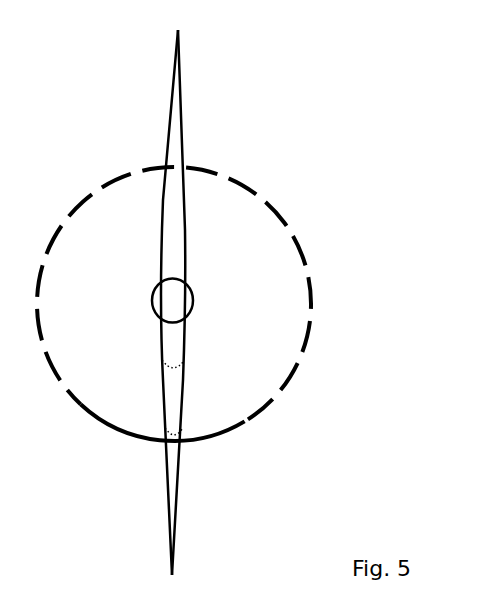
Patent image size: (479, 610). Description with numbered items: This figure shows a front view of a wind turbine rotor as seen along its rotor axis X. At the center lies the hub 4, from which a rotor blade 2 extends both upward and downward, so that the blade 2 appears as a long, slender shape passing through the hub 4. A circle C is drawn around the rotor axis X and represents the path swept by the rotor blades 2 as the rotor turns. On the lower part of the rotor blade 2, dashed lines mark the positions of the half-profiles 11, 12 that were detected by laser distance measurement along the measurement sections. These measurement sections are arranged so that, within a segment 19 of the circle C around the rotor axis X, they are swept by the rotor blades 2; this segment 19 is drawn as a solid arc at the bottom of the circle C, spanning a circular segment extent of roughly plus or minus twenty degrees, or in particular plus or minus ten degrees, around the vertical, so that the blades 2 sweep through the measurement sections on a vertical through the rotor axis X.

The rotor blade 2 is at (183, 116).
The hub 4 is at (192, 306).
The half-profile 11 is at (163, 360).
The half-profile 12 is at (165, 428).
The segment of the circle 19 is at (120, 432).
The rotor axis X is at (183, 287).
The circle C is at (288, 378).